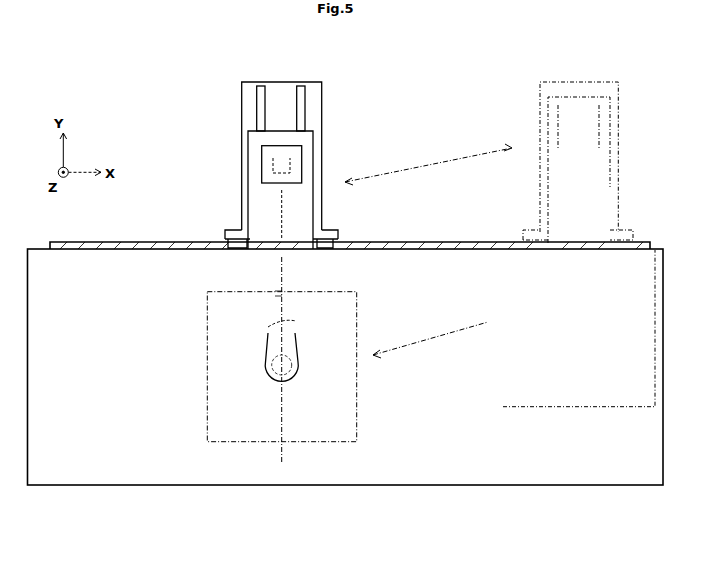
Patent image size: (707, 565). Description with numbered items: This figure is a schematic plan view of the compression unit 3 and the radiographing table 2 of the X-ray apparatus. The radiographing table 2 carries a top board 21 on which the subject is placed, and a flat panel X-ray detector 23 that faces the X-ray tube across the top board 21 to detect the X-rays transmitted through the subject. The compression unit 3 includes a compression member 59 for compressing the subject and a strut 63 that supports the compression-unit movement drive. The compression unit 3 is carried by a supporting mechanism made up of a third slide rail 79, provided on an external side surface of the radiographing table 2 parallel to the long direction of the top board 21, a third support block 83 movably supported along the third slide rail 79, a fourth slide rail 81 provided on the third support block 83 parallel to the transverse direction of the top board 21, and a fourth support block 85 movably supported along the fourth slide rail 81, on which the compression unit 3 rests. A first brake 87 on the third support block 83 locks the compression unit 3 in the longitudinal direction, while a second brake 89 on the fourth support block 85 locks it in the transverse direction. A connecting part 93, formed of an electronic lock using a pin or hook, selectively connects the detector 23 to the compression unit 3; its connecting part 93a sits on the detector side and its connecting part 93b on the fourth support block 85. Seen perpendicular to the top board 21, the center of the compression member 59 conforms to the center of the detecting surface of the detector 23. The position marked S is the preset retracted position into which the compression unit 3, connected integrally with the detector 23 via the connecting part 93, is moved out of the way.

The radiographing table 2 is at (392, 489).
The top board 21 is at (72, 483).
The flat panel X-ray detector 23 is at (206, 415).
The compression unit 3 is at (285, 153).
The compression member 59 is at (293, 378).
The strut 63 is at (302, 150).
The third slide rail 79 is at (226, 243).
The fourth slide rail 81 is at (299, 99).
The third support block 83 is at (318, 105).
The fourth support block 85 is at (317, 188).
The first brake 87 is at (288, 241).
The second brake 89 is at (262, 160).
The connecting part 93 is at (200, 284).
The connecting part on FPD side 93a is at (276, 296).
The connecting part on compression unit side 93b is at (277, 291).
The retracted position S is at (527, 116).